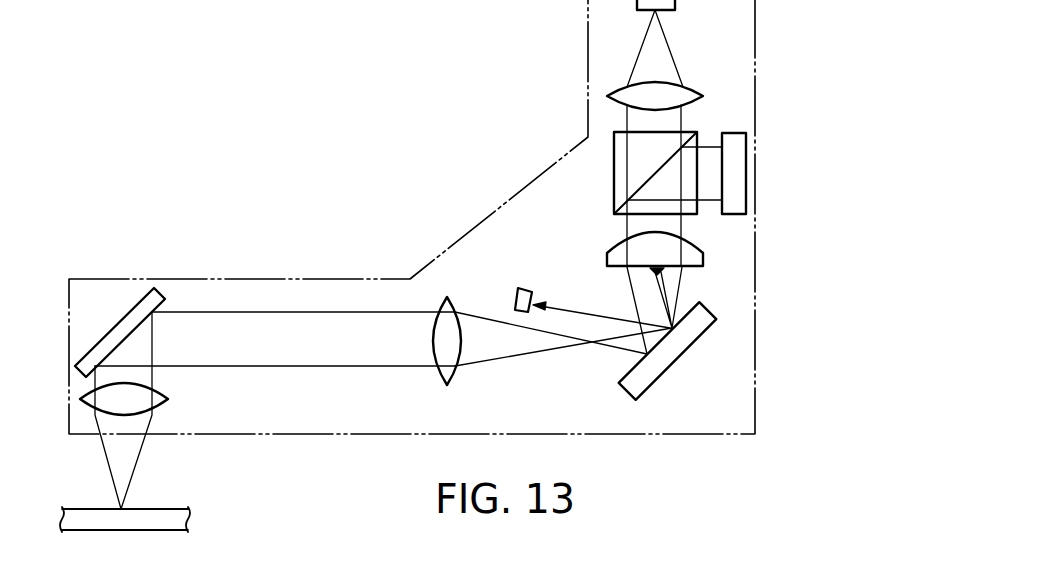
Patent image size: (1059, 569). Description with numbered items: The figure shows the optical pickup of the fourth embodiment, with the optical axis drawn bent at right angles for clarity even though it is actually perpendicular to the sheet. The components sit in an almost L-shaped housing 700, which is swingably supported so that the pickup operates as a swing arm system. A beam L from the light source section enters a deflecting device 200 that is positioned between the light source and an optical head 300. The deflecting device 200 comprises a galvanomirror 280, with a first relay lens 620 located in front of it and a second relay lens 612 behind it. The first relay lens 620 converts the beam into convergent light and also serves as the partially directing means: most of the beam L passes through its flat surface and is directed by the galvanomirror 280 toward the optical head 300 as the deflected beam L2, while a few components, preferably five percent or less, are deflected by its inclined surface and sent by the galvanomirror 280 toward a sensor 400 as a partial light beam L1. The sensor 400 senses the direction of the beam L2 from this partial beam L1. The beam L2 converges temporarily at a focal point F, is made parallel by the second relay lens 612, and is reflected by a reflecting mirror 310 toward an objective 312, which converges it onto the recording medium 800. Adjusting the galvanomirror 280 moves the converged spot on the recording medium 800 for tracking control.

The housing 700 is at (328, 278).
The optical head 300 is at (70, 325).
The reflecting mirror 310 is at (114, 333).
The objective 312 is at (170, 395).
The recording medium 800 is at (173, 517).
The second relay lens 612 is at (452, 375).
The sensor 400 is at (515, 290).
The galvanomirror 280 is at (672, 368).
The first relay lens 620 is at (612, 247).
The deflecting device 200 is at (724, 344).
The beam L is at (625, 227).
The partial light beam L1 is at (665, 297).
The deflected beam L2 is at (335, 368).
The focal point F is at (592, 344).